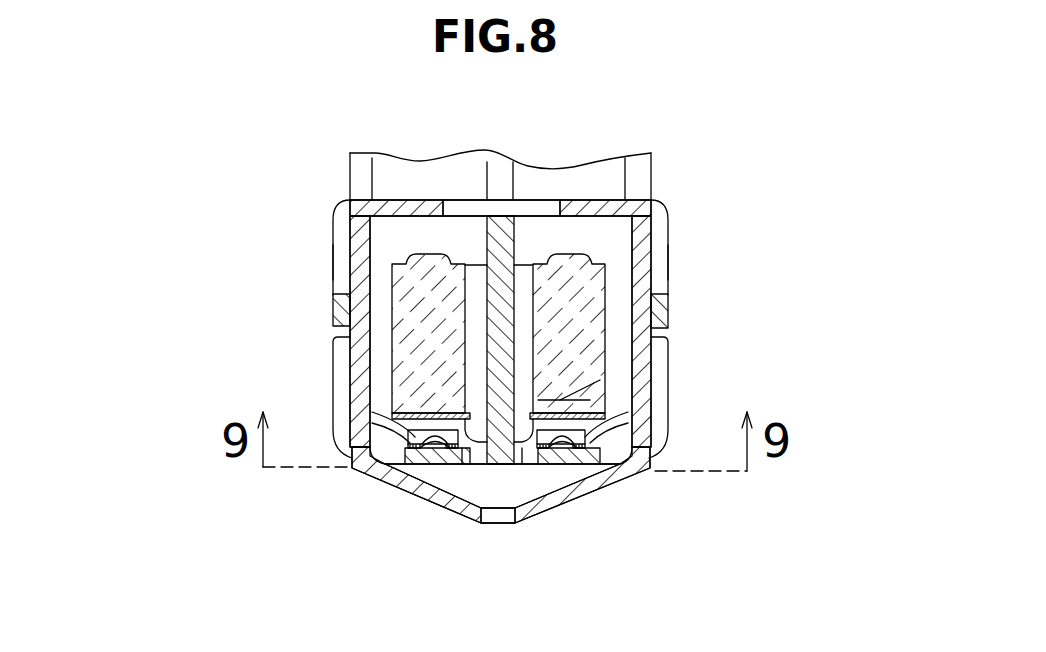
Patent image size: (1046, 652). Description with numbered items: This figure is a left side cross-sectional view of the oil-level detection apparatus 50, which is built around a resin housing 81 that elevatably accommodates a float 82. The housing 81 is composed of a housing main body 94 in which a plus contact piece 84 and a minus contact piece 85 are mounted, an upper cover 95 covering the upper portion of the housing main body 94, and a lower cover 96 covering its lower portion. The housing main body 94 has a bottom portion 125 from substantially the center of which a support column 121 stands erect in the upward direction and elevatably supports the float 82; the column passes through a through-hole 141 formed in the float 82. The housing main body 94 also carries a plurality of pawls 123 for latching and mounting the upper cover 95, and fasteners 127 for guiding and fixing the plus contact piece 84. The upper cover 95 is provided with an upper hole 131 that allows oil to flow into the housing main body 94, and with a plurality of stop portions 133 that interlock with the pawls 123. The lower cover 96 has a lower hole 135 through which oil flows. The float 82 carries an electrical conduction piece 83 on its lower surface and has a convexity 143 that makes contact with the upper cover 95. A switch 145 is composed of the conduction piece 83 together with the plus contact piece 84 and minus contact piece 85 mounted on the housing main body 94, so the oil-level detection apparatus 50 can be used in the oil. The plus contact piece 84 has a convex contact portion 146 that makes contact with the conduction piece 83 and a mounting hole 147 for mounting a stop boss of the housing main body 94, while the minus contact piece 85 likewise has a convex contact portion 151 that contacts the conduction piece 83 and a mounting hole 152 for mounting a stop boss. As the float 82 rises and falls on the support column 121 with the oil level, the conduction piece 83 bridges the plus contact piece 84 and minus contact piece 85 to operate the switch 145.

The oil-level detection apparatus 50 is at (248, 180).
The housing 81 is at (320, 247).
The float 82 is at (640, 202).
The electrical conduction piece 83 is at (623, 413).
The plus contact piece 84 is at (375, 424).
The minus contact piece 85 is at (592, 437).
The housing main body 94 is at (333, 350).
The upper cover 95 is at (382, 195).
The lower cover 96 is at (373, 490).
The support column 121 is at (497, 216).
The pawls 123 is at (340, 282).
The bottom portion 125 is at (622, 470).
The fasteners 127 is at (437, 449).
The upper hole 131 is at (545, 208).
The stop portions 133 is at (340, 318).
The lower hole 135 is at (504, 524).
The through-hole 141 is at (445, 256).
The convexity 143 is at (427, 256).
The switch 145 is at (620, 405).
The convex contact portion 146 is at (470, 446).
The mounting hole 147 is at (415, 448).
The convex contact portion 151 is at (522, 450).
The mounting hole 152 is at (582, 448).